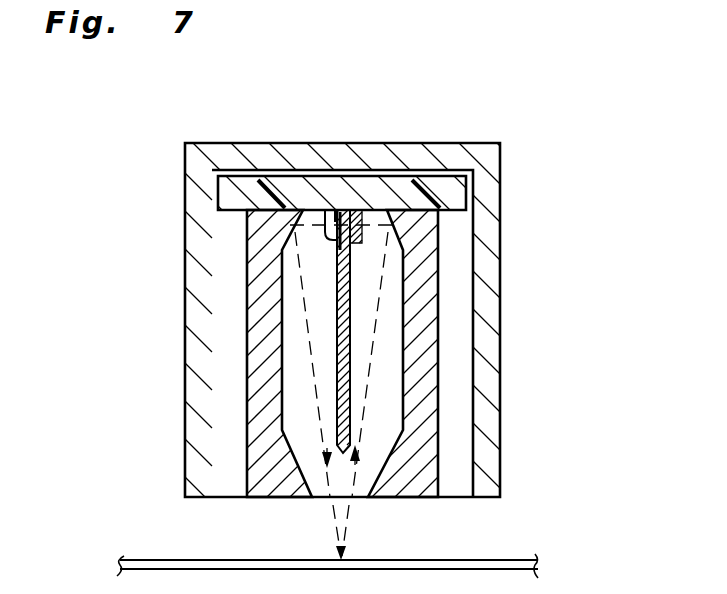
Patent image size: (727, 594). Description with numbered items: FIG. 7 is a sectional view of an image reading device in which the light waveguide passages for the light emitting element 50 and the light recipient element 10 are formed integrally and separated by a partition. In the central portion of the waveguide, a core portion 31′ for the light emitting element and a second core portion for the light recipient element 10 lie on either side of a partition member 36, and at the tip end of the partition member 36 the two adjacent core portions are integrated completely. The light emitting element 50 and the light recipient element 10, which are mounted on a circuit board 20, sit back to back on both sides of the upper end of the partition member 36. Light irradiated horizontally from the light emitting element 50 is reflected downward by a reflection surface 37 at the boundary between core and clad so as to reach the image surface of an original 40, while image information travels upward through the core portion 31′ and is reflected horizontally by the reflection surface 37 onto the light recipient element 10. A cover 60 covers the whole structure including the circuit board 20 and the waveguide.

The light recipient element 10 is at (380, 228).
The circuit board 20 is at (425, 193).
The core portion 31′ is at (383, 410).
The partition member 36 is at (340, 320).
The reflection surface 37 is at (270, 200).
The original 40 is at (480, 560).
The light emitting element 50 is at (332, 208).
The cover 60 is at (500, 325).